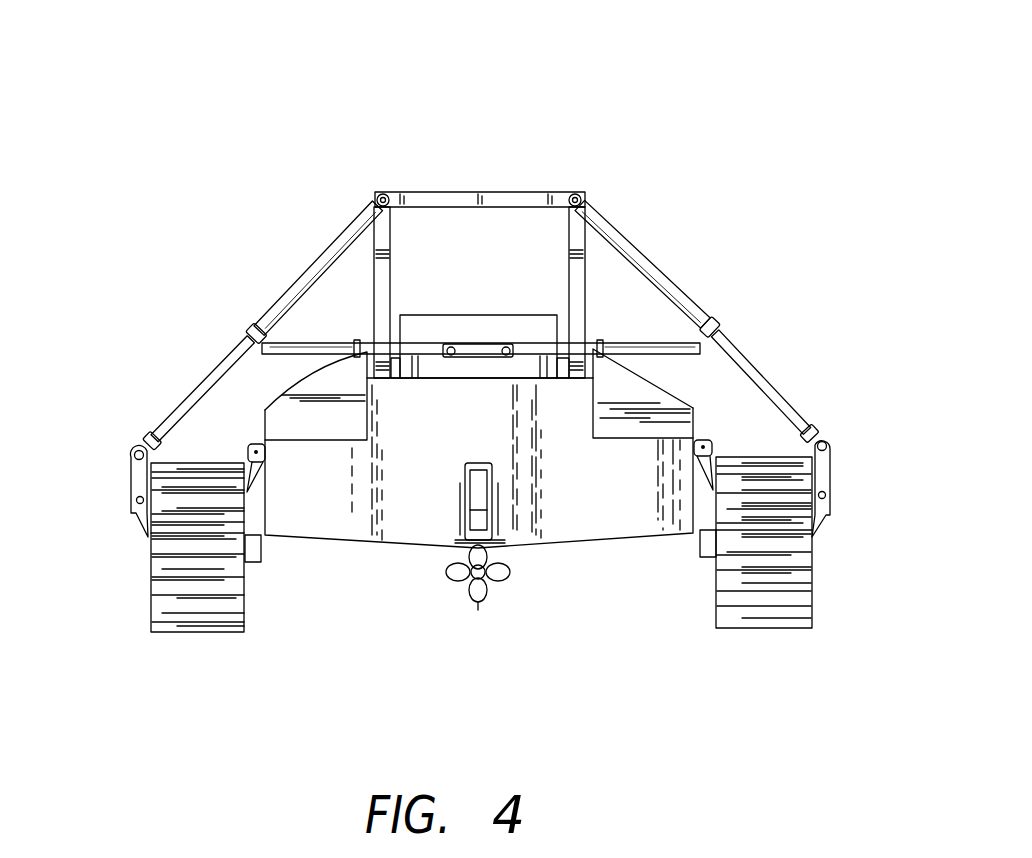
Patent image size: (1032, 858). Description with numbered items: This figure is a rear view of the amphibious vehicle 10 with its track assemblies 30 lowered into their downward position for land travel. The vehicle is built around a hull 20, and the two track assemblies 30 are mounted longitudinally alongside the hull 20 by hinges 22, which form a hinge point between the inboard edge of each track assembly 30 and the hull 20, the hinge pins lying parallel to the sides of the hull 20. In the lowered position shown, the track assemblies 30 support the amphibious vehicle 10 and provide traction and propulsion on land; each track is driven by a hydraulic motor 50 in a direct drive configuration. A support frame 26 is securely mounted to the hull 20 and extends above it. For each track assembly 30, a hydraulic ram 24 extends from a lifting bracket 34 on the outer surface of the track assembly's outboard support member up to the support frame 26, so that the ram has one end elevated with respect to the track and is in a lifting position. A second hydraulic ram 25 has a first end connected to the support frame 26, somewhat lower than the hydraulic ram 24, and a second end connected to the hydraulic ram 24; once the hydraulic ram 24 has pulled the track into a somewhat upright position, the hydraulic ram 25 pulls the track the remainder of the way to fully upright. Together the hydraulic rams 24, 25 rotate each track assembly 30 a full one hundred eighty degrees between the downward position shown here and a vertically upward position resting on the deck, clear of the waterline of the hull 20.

The amphibious vehicle 10 is at (661, 107).
The hull 20 is at (569, 543).
The hinges 22 is at (259, 466).
The hydraulic ram 24 is at (296, 278).
The hydraulic ram 25 is at (408, 342).
The support frame 26 is at (473, 191).
The track assemblies 30 is at (150, 607).
The lifting bracket 34 is at (131, 478).
The hydraulic motor 50 is at (262, 546).